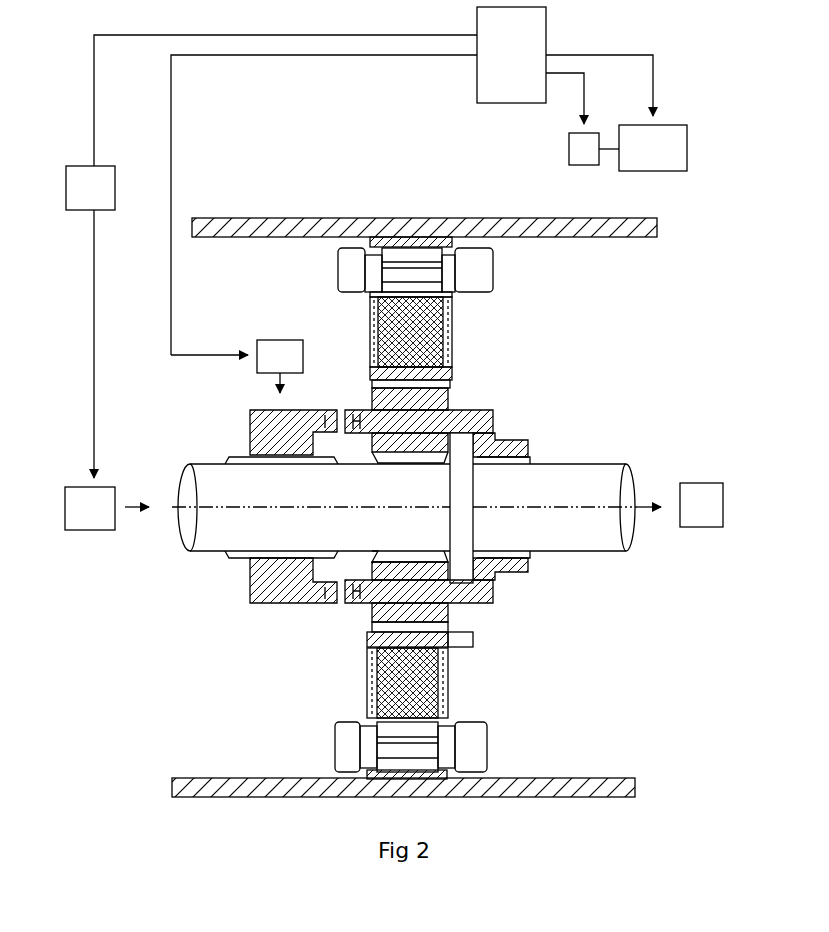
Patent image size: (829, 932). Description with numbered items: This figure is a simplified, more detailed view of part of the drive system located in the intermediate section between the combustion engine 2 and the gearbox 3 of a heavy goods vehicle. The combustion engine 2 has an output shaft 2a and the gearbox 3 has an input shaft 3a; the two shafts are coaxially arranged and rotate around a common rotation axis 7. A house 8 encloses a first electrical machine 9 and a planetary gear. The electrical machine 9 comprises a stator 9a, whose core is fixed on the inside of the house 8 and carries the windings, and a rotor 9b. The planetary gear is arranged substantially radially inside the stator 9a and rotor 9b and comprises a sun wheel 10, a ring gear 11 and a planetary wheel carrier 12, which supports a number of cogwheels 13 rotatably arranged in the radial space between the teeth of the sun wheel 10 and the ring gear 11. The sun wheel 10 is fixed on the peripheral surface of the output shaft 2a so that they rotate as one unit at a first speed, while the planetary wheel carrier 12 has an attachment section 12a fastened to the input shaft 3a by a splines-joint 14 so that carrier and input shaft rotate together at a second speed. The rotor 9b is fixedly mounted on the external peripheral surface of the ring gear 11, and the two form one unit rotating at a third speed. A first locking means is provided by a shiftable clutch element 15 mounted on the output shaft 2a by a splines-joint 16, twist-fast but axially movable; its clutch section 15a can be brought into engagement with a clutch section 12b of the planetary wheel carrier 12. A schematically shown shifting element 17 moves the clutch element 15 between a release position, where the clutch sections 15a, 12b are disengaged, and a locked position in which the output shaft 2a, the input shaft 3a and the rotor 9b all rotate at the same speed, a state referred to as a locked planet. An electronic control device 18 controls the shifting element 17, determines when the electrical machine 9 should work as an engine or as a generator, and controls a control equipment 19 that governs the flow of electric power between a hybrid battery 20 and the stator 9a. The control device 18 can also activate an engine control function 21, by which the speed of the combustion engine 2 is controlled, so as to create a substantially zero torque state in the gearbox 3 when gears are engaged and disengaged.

The combustion engine 2 is at (92, 512).
The output shaft 2a is at (213, 530).
The gearbox 3 is at (703, 512).
The input shaft 3a is at (582, 532).
The common rotation axis 7 is at (587, 503).
The house 8 is at (263, 782).
The first electrical machine 9 is at (402, 274).
The stator 9a is at (475, 279).
The rotor 9b is at (397, 326).
The sun wheel 10 is at (395, 458).
The ring gear 11 is at (400, 374).
The planetary wheel carrier 12 is at (472, 600).
The attachment section 12a is at (508, 565).
The clutch section 12b is at (352, 593).
The cogwheels 13 is at (407, 400).
The splines-joint 14 is at (530, 564).
The clutch element 15 is at (267, 445).
The clutch section 15a is at (317, 600).
The splines-joint 16 is at (262, 462).
The shifting element 17 is at (280, 348).
The electronic control device 18 is at (511, 55).
The control equipment 19 is at (583, 148).
The hybrid battery 20 is at (662, 146).
The engine control function 21 is at (94, 185).